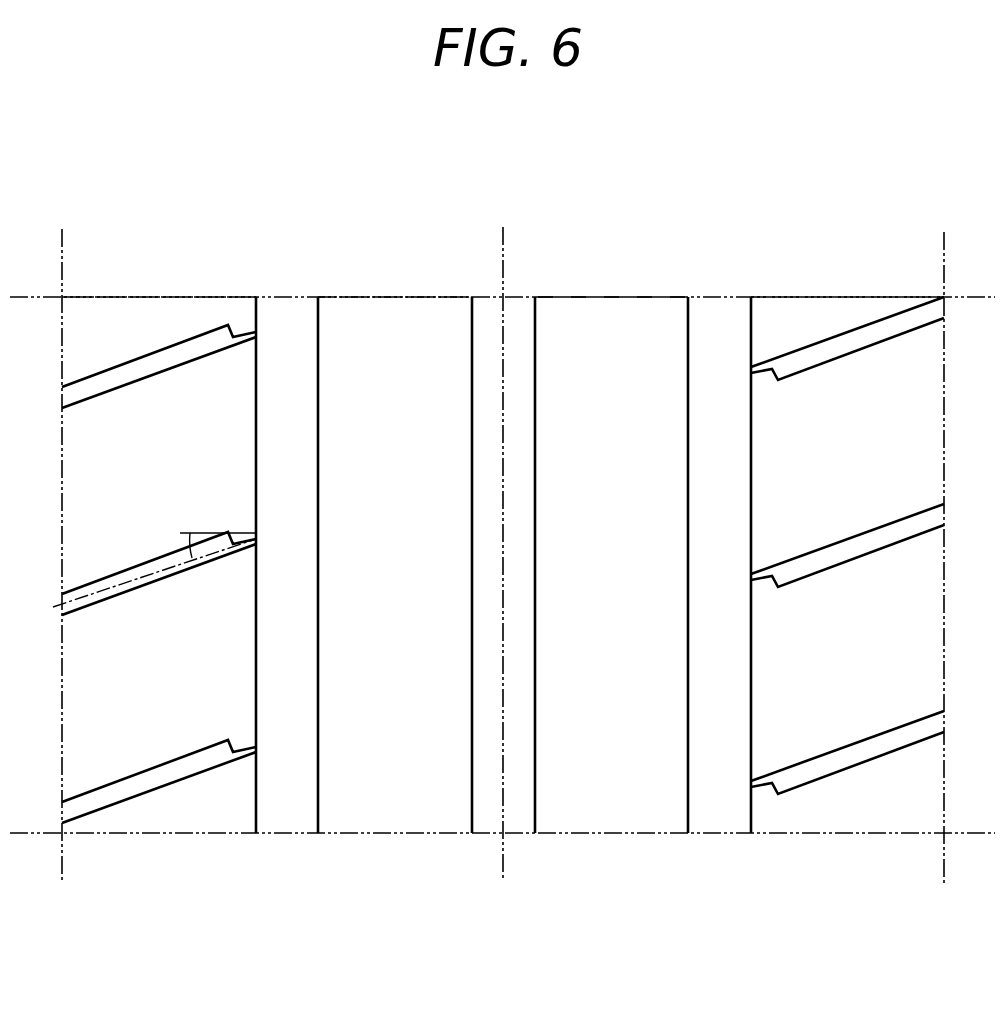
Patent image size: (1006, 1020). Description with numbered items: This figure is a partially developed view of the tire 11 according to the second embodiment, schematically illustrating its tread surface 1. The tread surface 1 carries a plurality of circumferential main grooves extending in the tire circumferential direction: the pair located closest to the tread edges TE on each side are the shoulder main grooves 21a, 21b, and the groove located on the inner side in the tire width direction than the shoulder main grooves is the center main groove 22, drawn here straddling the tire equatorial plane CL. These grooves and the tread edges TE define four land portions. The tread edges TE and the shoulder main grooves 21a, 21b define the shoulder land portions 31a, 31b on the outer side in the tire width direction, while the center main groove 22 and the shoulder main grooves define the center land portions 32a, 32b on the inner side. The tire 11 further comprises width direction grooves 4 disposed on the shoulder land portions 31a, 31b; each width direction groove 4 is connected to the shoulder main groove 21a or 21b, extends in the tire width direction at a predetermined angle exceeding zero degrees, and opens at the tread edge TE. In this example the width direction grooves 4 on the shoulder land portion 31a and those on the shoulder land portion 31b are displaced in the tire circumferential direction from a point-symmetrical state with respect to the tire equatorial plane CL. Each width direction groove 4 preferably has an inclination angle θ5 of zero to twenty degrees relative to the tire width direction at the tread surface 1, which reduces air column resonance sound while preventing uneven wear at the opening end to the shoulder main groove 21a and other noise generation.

The tread surface 1 is at (694, 235).
The tire 11 is at (830, 187).
The shoulder main groove 21a is at (288, 813).
The shoulder main groove 21b is at (720, 815).
The center main groove 22 is at (490, 813).
The shoulder land portion 31a is at (155, 317).
The shoulder land portion 31b is at (843, 312).
The center land portion 32a is at (394, 317).
The center land portion 32b is at (608, 317).
The width direction grooves 4 is at (147, 367).
The inclination angle θ 5 is at (154, 567).